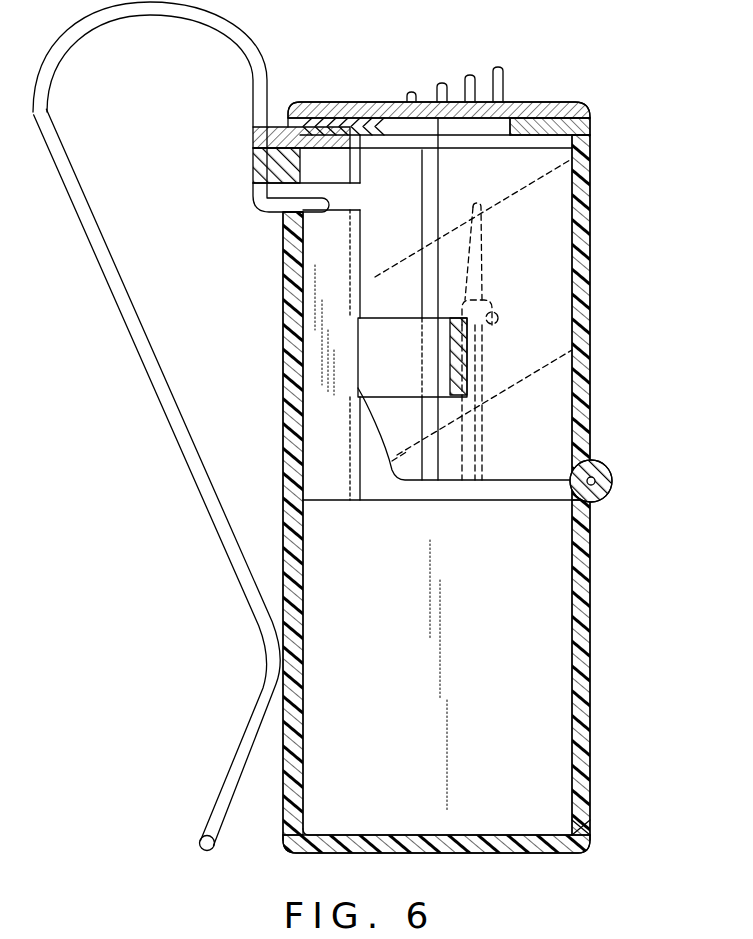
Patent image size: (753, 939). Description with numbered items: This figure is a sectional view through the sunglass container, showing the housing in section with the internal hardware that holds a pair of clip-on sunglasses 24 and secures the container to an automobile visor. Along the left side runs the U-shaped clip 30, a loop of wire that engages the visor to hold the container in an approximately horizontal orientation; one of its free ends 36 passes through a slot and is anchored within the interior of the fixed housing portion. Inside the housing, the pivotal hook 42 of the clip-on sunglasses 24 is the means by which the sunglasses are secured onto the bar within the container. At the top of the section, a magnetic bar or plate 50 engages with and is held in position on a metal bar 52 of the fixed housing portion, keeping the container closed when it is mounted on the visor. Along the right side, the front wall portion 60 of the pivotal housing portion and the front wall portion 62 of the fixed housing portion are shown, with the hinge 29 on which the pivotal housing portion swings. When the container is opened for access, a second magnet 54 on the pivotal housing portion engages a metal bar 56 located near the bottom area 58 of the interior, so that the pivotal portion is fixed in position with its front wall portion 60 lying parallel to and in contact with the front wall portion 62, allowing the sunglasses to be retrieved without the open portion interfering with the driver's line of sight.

The clip-on sunglasses 24 is at (497, 292).
The hinge 29 is at (612, 497).
The U-shaped clip 30 is at (135, 340).
The free end 36 is at (292, 248).
The pivotal hook 42 is at (445, 352).
The magnetic bar or plate 50 is at (348, 130).
The metal bar 52 is at (253, 166).
The second magnet 54 is at (590, 126).
The metal bar 56 is at (593, 830).
The bottom area 58 is at (379, 795).
The front wall portion 60 is at (590, 328).
The front wall portion 62 is at (580, 697).